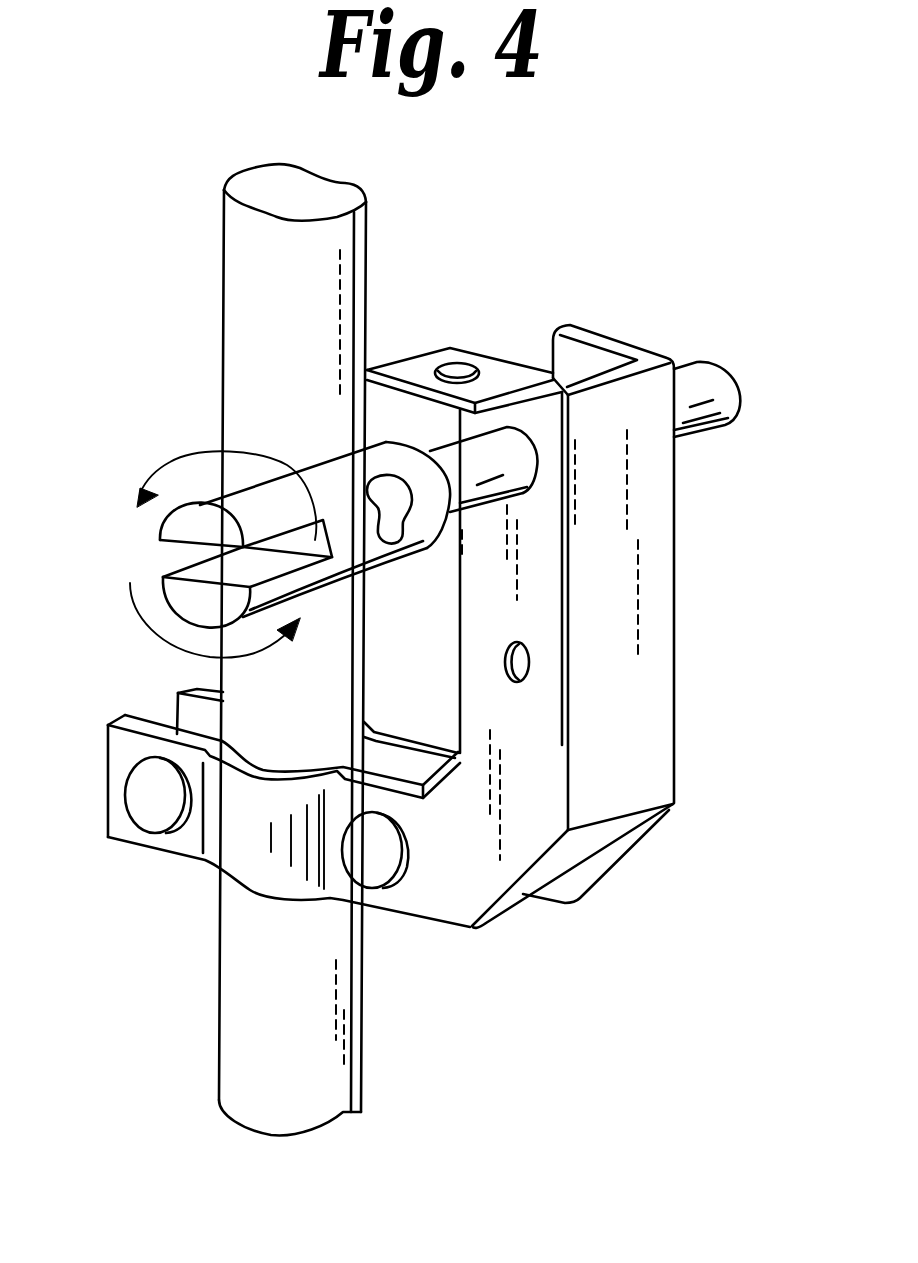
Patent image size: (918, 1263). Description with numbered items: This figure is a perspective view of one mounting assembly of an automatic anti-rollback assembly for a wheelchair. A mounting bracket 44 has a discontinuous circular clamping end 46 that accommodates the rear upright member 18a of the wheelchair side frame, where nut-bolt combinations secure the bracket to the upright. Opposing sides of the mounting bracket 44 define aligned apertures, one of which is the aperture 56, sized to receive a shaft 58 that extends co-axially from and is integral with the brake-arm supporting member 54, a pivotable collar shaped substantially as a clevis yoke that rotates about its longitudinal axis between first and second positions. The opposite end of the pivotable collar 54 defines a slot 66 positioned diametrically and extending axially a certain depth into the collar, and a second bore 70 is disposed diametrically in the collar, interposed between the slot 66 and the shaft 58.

The rear upright member 18a is at (248, 272).
The mounting bracket 44 is at (653, 660).
The discontinuous circular clamping end 46 is at (218, 850).
The brake-arm supporting member 54 is at (323, 472).
The aperture 56 is at (537, 467).
The shaft 58 is at (704, 388).
The slot 66 is at (187, 552).
The second bore 70 is at (394, 523).